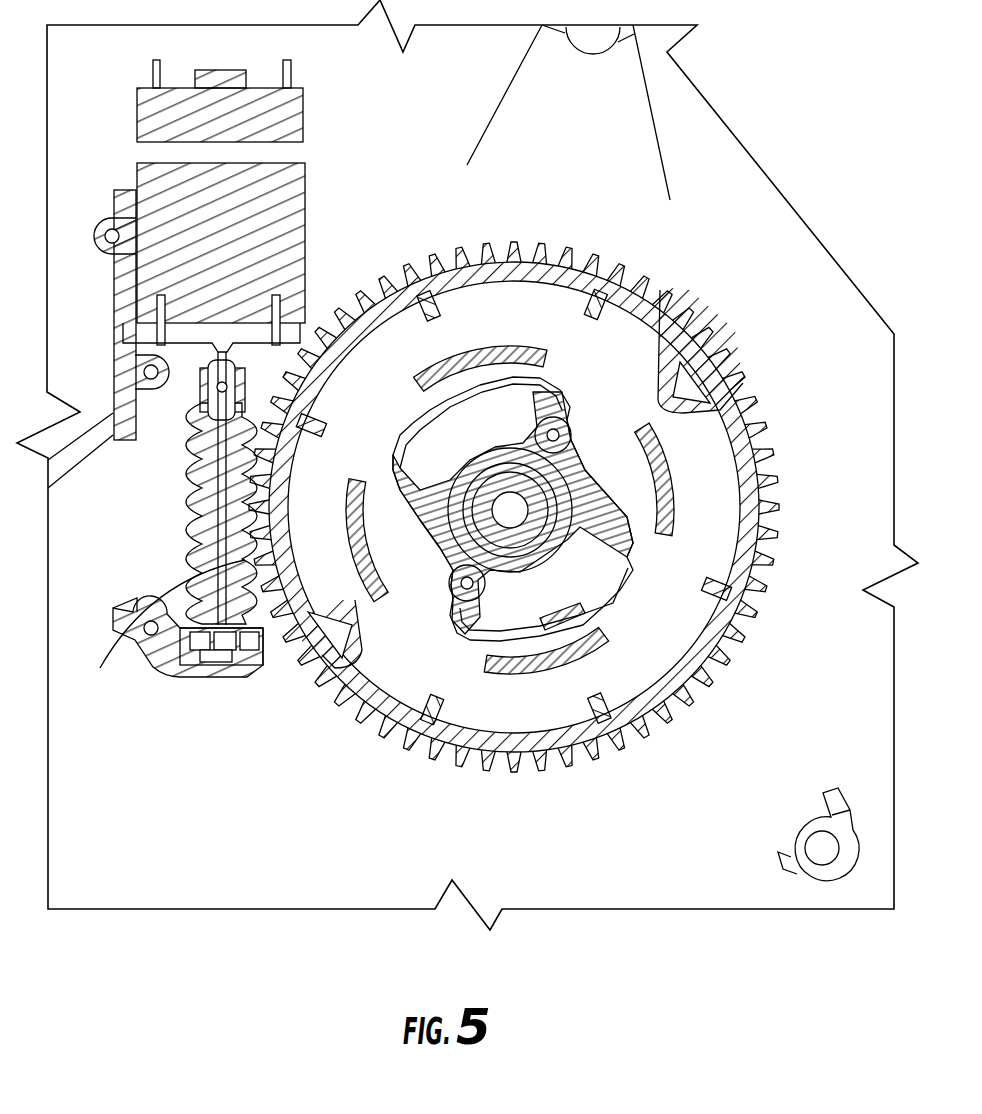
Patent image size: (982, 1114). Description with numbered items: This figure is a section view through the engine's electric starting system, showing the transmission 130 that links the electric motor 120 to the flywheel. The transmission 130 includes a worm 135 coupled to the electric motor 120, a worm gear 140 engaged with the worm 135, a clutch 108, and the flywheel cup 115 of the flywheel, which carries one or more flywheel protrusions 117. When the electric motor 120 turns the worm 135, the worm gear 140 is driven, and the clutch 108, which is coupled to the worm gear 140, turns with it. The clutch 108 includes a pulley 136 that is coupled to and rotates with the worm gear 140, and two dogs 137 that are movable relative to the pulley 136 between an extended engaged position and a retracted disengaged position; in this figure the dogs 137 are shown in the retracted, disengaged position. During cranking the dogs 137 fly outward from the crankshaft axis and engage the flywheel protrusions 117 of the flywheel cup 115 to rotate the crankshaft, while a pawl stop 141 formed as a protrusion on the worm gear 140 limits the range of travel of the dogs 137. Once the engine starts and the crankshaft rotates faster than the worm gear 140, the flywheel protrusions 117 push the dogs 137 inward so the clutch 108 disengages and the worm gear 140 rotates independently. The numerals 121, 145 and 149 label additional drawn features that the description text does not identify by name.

The clutch 108 is at (566, 499).
The flywheel cup 115 is at (598, 636).
The flywheel protrusions 117 is at (668, 515).
The electric motor 120 is at (181, 239).
The worm shaft 121 is at (222, 358).
The transmission 130 is at (878, 235).
The worm 135 is at (121, 609).
The pulley 136 is at (600, 553).
The dogs 137 is at (592, 474).
The worm gear 140 is at (771, 453).
The pawl stop 141 is at (706, 401).
The mounting boss 145 is at (815, 839).
The tab 149 is at (841, 788).